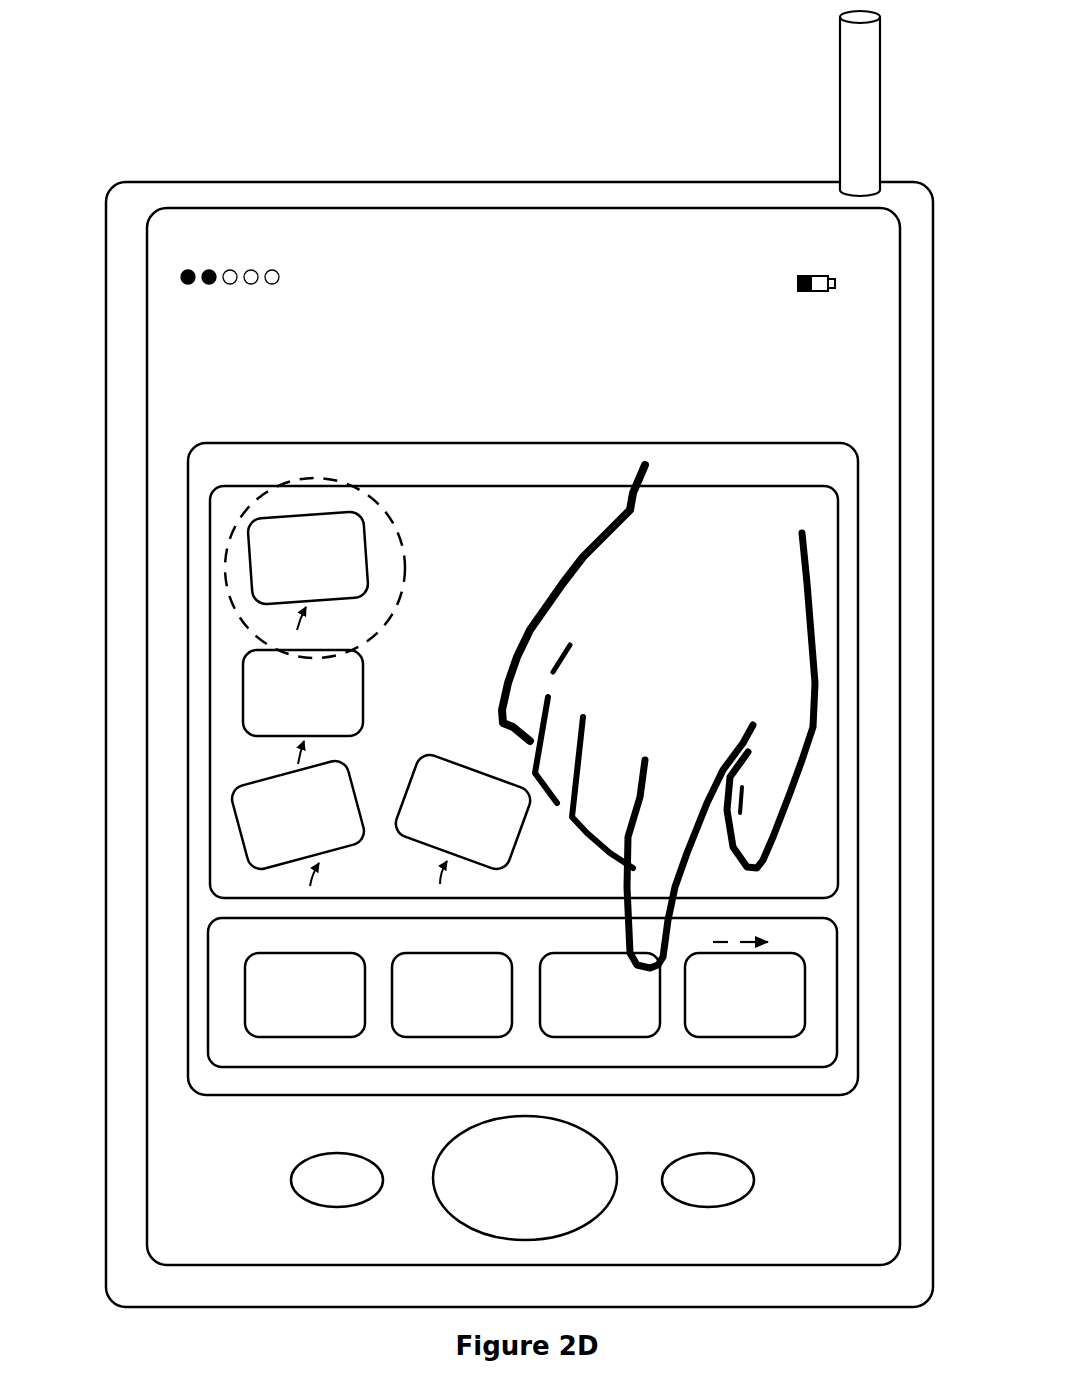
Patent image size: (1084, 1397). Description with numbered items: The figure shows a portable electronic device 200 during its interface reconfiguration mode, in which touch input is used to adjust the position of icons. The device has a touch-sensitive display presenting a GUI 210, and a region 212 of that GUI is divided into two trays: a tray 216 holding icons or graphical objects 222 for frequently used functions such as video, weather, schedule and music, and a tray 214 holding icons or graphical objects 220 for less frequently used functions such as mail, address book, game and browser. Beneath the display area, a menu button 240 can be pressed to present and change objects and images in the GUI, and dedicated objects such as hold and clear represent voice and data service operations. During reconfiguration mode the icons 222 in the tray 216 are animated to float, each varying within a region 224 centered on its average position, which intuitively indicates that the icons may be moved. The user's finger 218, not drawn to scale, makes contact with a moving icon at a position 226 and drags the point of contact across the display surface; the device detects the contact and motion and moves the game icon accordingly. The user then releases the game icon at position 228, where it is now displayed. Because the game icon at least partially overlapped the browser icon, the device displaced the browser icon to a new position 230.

The portable electronic device 200 is at (766, 136).
The GUI 210 is at (519, 659).
The region 212 is at (457, 771).
The tray 214 is at (450, 1013).
The tray 216 is at (447, 676).
The finger 218 is at (597, 547).
The icons or graphical objects 220 is at (228, 949).
The icons or graphical objects 222 is at (228, 632).
The region 224 is at (303, 489).
The position 226 is at (453, 718).
The position 228 is at (605, 1037).
The position 230 is at (742, 1037).
The menu button 240 is at (525, 1178).